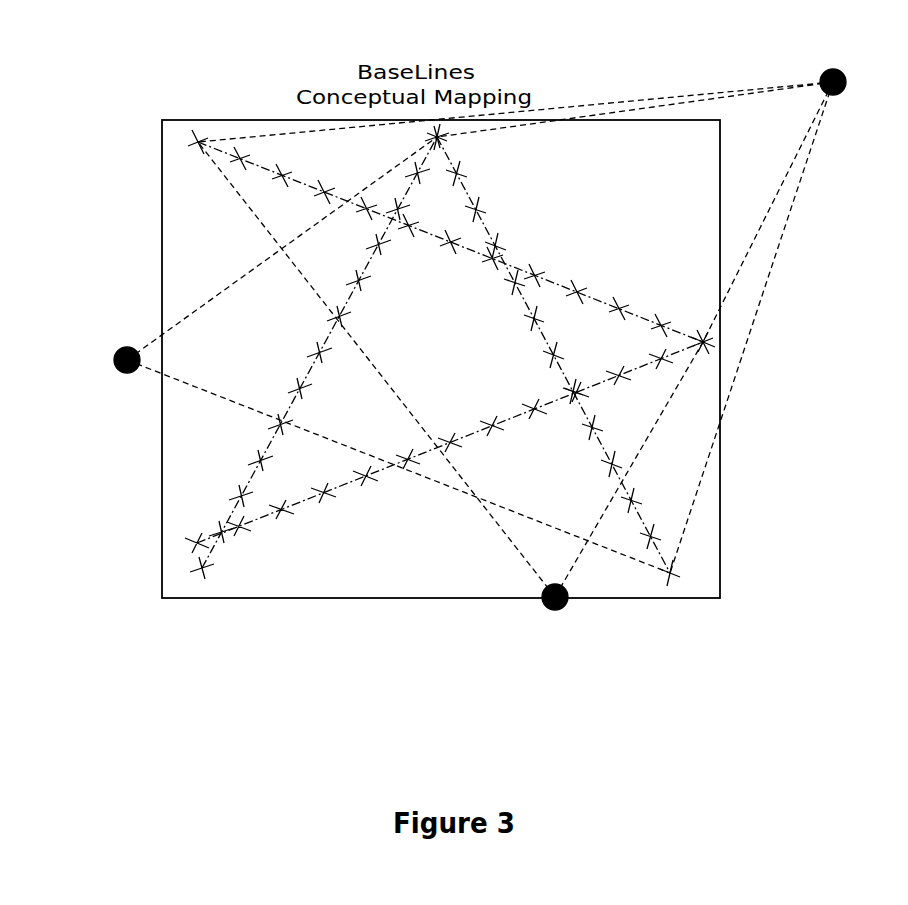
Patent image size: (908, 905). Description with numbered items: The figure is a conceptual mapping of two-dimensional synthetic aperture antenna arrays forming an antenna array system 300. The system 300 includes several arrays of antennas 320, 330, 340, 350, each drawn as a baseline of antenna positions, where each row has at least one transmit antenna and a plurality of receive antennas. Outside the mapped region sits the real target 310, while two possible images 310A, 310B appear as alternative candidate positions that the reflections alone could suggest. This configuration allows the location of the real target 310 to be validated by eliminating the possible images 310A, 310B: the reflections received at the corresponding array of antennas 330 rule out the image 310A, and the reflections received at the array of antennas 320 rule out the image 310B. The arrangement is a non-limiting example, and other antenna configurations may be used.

The antenna array system 300 is at (205, 731).
The real target 310 is at (826, 68).
The possible image 310A is at (120, 350).
The possible image 310B is at (560, 586).
The array of antennas 320 is at (230, 134).
The array of antennas 330 is at (470, 178).
The array of antennas 340 is at (512, 412).
The array of antennas 350 is at (302, 380).